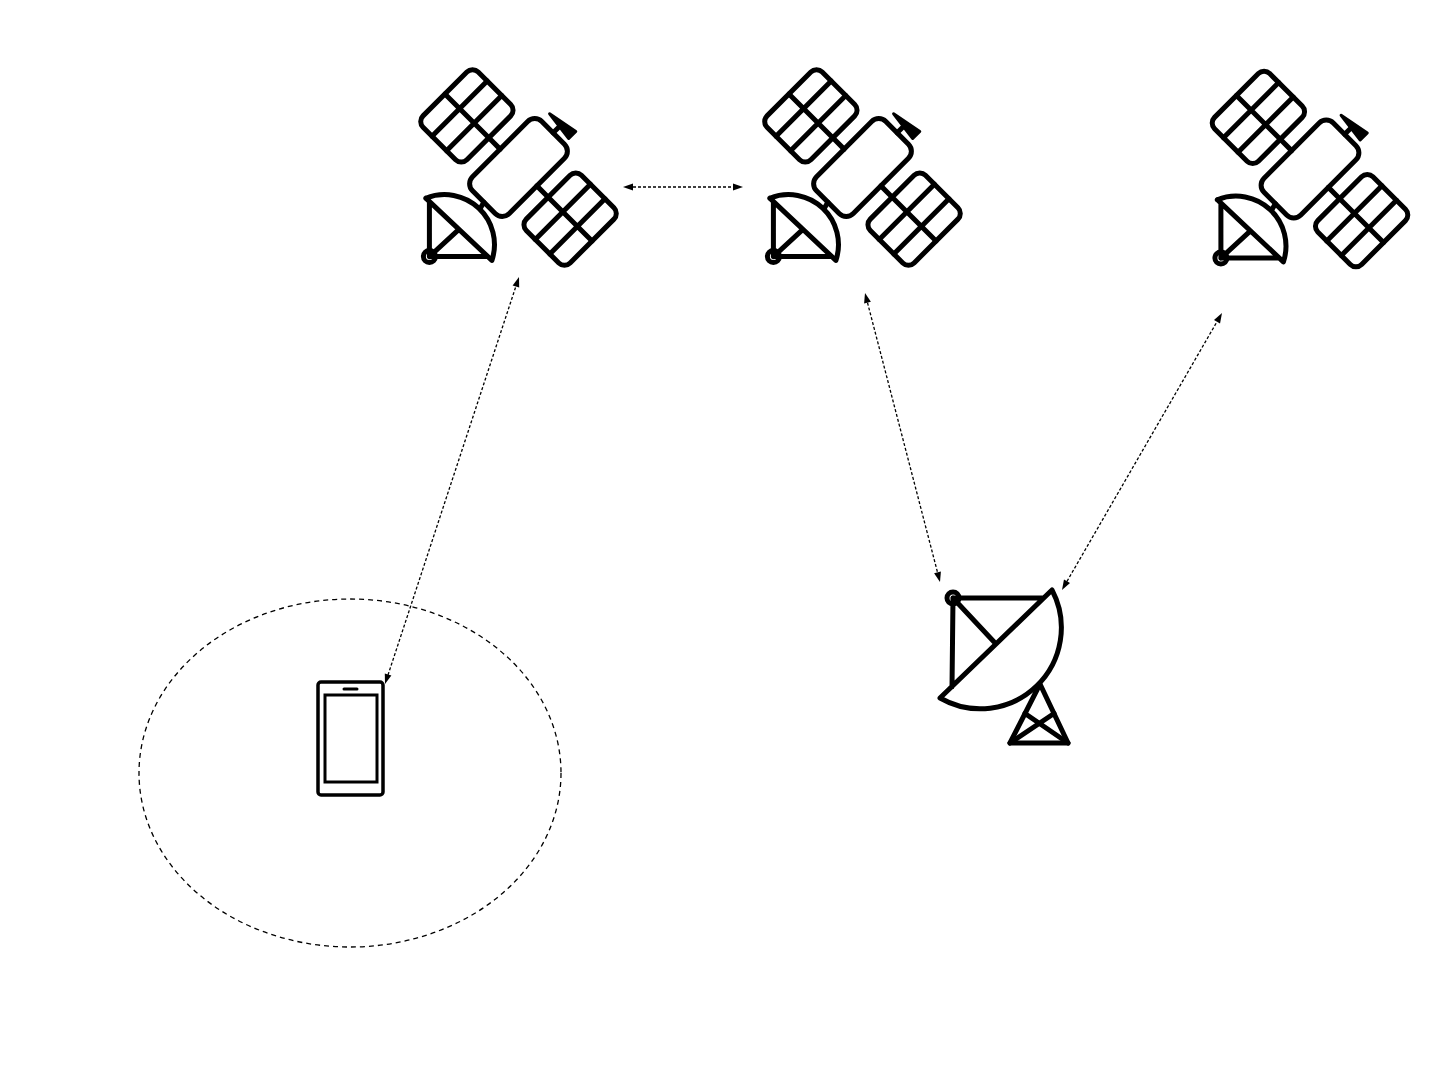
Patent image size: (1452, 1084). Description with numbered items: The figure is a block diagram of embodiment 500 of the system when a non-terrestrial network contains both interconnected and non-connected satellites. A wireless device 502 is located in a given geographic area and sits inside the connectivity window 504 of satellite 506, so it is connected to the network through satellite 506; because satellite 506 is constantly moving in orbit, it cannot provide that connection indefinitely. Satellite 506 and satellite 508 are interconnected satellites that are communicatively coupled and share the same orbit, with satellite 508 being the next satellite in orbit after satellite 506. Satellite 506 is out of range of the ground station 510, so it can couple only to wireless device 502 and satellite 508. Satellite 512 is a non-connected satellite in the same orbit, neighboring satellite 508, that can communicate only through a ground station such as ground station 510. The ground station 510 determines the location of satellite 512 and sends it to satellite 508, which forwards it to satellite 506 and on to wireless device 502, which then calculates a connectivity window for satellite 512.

The embodiment of the system 500 is at (1377, 93).
The wireless device 502 is at (350, 749).
The connectivity window 504 is at (350, 777).
The satellite 506 is at (494, 191).
The satellite 508 is at (838, 191).
The ground station 510 is at (1004, 688).
The satellite 512 is at (1285, 193).